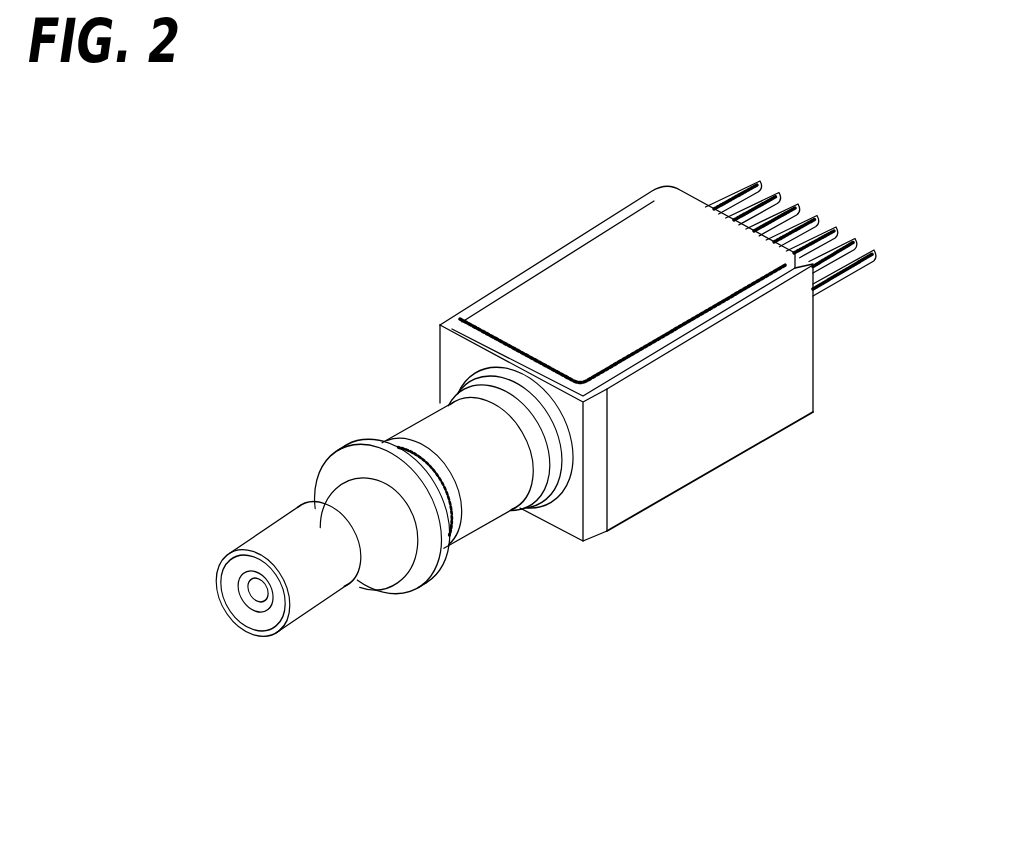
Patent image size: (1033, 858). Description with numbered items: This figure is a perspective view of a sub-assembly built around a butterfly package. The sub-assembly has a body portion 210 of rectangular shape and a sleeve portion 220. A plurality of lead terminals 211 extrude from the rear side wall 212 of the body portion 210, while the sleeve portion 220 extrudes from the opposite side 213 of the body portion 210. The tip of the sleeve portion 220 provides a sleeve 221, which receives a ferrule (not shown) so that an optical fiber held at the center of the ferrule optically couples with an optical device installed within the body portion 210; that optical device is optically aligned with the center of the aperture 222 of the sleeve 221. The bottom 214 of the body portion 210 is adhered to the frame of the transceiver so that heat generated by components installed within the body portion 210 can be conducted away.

The body portion 210 is at (632, 139).
The lead terminals 211 is at (744, 162).
The rear side wall 212 is at (815, 364).
The side 213 is at (558, 512).
The bottom 214 is at (718, 468).
The sleeve portion 220 is at (372, 316).
The sleeve 221 is at (323, 580).
The aperture 222 is at (248, 593).